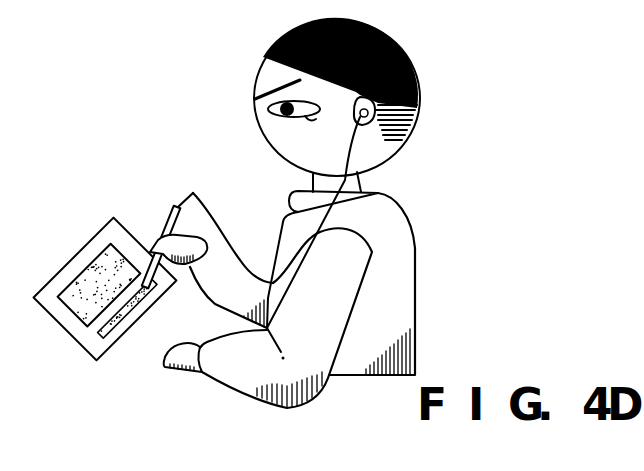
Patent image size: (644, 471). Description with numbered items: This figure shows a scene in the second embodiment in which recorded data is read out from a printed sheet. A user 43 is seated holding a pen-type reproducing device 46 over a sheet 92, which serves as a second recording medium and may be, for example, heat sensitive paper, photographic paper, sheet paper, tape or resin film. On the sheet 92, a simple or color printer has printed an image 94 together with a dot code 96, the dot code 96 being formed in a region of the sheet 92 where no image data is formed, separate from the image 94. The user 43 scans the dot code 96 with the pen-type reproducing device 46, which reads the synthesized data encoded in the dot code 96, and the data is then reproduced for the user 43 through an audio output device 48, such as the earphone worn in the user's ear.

The user 43 is at (406, 261).
The pen-type reproducing device 46 is at (159, 217).
The audio output device 48 is at (364, 140).
The sheet 92 is at (72, 318).
The image 94 is at (82, 272).
The dot code 96 is at (117, 328).